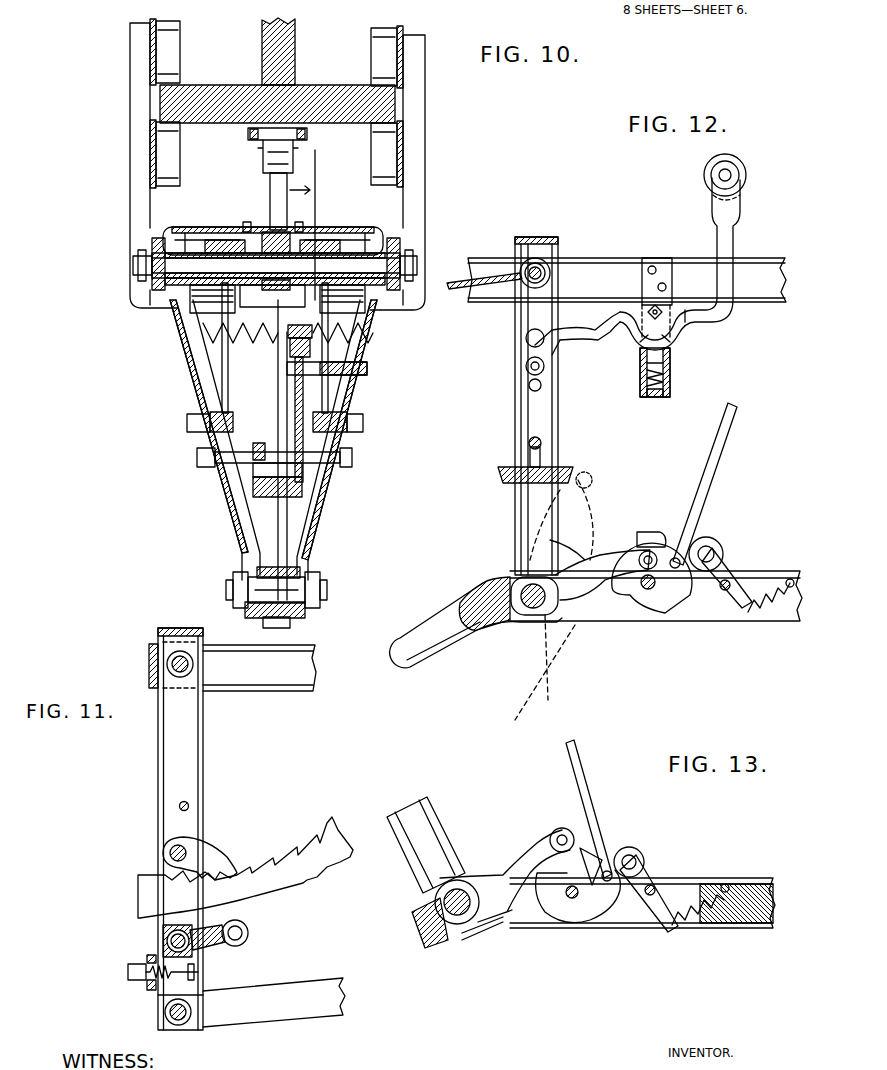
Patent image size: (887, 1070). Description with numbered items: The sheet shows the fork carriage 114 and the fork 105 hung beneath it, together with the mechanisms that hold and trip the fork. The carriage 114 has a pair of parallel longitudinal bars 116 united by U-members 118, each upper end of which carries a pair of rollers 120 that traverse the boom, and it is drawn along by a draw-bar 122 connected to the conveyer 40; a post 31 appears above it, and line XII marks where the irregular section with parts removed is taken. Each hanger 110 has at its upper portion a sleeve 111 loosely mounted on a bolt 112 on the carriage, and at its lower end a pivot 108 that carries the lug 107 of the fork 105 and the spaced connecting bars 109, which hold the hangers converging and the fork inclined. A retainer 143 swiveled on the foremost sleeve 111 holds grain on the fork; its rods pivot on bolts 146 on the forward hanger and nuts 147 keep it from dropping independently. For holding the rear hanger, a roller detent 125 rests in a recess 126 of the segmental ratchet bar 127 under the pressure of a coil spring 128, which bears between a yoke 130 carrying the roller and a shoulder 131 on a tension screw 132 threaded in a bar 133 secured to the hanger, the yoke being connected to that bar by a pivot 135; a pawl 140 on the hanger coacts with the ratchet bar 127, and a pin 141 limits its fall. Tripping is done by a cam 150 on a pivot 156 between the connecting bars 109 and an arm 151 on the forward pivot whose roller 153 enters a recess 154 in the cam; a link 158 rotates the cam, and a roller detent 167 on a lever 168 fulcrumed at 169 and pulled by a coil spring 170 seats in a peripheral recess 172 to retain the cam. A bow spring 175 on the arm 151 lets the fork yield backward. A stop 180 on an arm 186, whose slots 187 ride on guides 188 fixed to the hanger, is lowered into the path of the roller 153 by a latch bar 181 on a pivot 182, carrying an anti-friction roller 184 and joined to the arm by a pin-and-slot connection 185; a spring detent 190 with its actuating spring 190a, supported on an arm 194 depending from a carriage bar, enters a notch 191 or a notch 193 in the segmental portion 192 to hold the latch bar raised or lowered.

In FIG. 10, the post 31 is at (255, 85).
In FIG. 10, the conveyer 40 is at (252, 133).
In FIG. 12, the fork 105 is at (485, 700).
In FIG. 13, the fork 105 is at (420, 935).
In FIG. 10, the lug 107 is at (295, 558).
In FIG. 12, the lug 107 is at (545, 605).
In FIG. 13, the lug 107 is at (440, 898).
In FIG. 10, the pivot 108 is at (233, 590).
In FIG. 11, the pivot 108 is at (180, 1025).
In FIG. 12, the pivot 108 is at (525, 610).
In FIG. 13, the pivot 108 is at (455, 915).
In FIG. 10, the connecting bars 109 is at (305, 578).
In FIG. 11, the connecting bars 109 is at (325, 1004).
In FIG. 12, the connecting bars 109 is at (733, 620).
In FIG. 13, the connecting bars 109 is at (760, 932).
In FIG. 10, the hanger 110 is at (240, 507).
In FIG. 11, the hanger 110 is at (160, 777).
In FIG. 12, the hanger 110 is at (520, 320).
In FIG. 13, the hanger 110 is at (418, 800).
In FIG. 10, the sleeve 111 is at (165, 290).
In FIG. 11, the sleeve 111 is at (169, 661).
In FIG. 12, the sleeve 111 is at (553, 248).
In FIG. 10, the bolt 112 is at (133, 268).
In FIG. 11, the bolt 112 is at (171, 655).
In FIG. 12, the bolt 112 is at (537, 258).
In FIG. 10, the fork carriage 114 is at (108, 197).
In FIG. 10, the longitudinal bar 116 is at (163, 243).
In FIG. 11, the longitudinal bar 116 is at (313, 691).
In FIG. 12, the longitudinal bar 116 is at (605, 262).
In FIG. 10, the U-member 118 is at (130, 105).
In FIG. 10, the roller 120 is at (160, 47).
In FIG. 10, the draw-bar 122 is at (268, 192).
In FIG. 11, the roller detent 125 is at (249, 949).
In FIG. 11, the recess 126 is at (327, 901).
In FIG. 11, the segmental ratchet bar 127 is at (338, 818).
In FIG. 11, the coil spring 128 is at (160, 993).
In FIG. 11, the yoke 130 is at (214, 944).
In FIG. 11, the shoulder 131 is at (171, 950).
In FIG. 11, the tension screw 132 is at (128, 971).
In FIG. 11, the bar 133 is at (147, 996).
In FIG. 11, the pivot 135 is at (173, 938).
In FIG. 11, the pawl 140 is at (214, 856).
In FIG. 11, the pin 141 is at (177, 810).
In FIG. 10, the retainer 143 is at (200, 330).
In FIG. 12, the retainer 143 is at (468, 277).
In FIG. 10, the bolt 146 is at (187, 423).
In FIG. 10, the nut 147 is at (220, 387).
In FIG. 12, the cam 150 is at (665, 610).
In FIG. 13, the cam 150 is at (595, 920).
In FIG. 10, the arm 151 is at (300, 540).
In FIG. 12, the arm 151 is at (630, 612).
In FIG. 13, the arm 151 is at (505, 865).
In FIG. 12, the roller 153 is at (655, 550).
In FIG. 13, the roller 153 is at (560, 830).
In FIG. 12, the recess 154 is at (672, 556).
In FIG. 12, the pivot 156 is at (657, 593).
In FIG. 13, the pivot 156 is at (570, 905).
In FIG. 12, the link 158 is at (740, 437).
In FIG. 13, the link 158 is at (575, 755).
In FIG. 12, the roller detent 167 is at (720, 545).
In FIG. 13, the roller detent 167 is at (638, 850).
In FIG. 12, the lever 168 is at (735, 552).
In FIG. 13, the lever 168 is at (665, 905).
In FIG. 13, the fulcrum 169 is at (648, 897).
In FIG. 12, the coil spring 170 is at (780, 605).
In FIG. 13, the coil spring 170 is at (705, 920).
In FIG. 12, the recess 172 is at (680, 545).
In FIG. 13, the recess 172 is at (602, 858).
In FIG. 10, the bow spring 175 is at (290, 635).
In FIG. 12, the bow spring 175 is at (493, 628).
In FIG. 13, the bow spring 175 is at (470, 940).
In FIG. 10, the stop 180 is at (305, 505).
In FIG. 12, the stop 180 is at (500, 471).
In FIG. 10, the latch bar 181 is at (290, 345).
In FIG. 12, the latch bar 181 is at (743, 240).
In FIG. 12, the pivot 182 is at (670, 300).
In FIG. 12, the anti-friction roller 184 is at (705, 165).
In FIG. 12, the pin-and-slot connection 185 is at (560, 352).
In FIG. 10, the arm 186 is at (352, 451).
In FIG. 12, the arm 186 is at (525, 408).
In FIG. 10, the slot 187 is at (290, 460).
In FIG. 12, the slot 187 is at (528, 386).
In FIG. 10, the guide 188 is at (368, 366).
In FIG. 12, the guide 188 is at (528, 362).
In FIG. 12, the spring detent 190 is at (672, 366).
In FIG. 12, the actuating spring 190a is at (672, 384).
In FIG. 12, the notch 191 is at (635, 333).
In FIG. 12, the segmental portion 192 is at (685, 330).
In FIG. 12, the notch 193 is at (675, 348).
In FIG. 12, the arm 194 is at (640, 392).
In FIG. 10, the section line XII is at (318, 224).